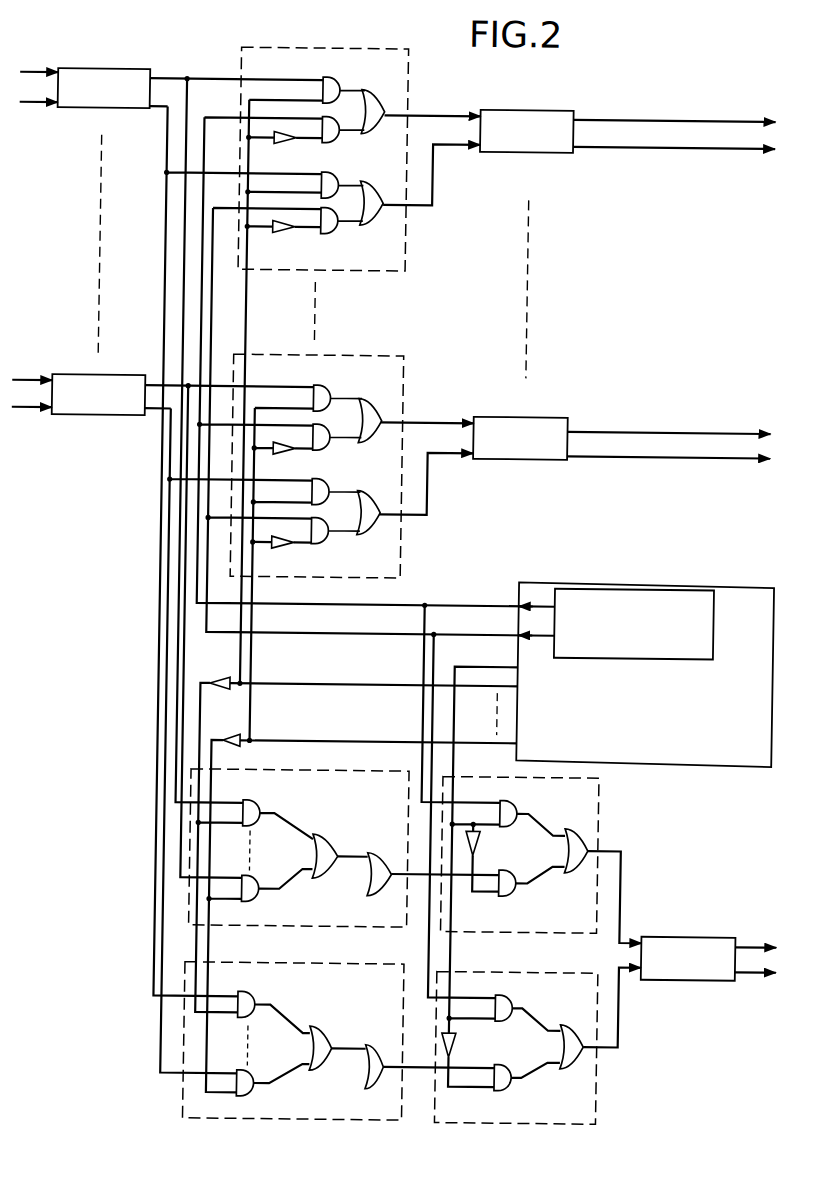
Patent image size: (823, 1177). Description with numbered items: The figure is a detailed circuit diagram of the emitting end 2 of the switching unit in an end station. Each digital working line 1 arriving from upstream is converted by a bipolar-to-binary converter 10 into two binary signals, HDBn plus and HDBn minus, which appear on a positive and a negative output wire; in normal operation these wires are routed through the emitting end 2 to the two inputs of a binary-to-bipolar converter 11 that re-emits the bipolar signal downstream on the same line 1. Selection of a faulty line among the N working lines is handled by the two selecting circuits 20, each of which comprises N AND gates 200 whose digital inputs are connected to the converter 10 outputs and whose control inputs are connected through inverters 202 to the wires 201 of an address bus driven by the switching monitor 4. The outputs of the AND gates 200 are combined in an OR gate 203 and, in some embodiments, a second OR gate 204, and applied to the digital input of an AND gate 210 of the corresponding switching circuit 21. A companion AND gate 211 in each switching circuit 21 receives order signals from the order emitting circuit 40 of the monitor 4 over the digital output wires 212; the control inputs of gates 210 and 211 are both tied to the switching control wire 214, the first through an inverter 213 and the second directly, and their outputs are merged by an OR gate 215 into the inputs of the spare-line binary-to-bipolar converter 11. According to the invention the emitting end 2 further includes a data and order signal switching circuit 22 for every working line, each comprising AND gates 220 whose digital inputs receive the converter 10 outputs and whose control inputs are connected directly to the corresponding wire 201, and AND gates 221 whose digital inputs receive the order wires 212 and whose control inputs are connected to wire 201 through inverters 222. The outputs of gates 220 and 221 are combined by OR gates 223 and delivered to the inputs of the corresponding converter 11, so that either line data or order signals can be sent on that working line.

The emitting end of the switching unit 2 is at (132, 1078).
The switching monitor 4 is at (729, 765).
The order emitting circuit 40 is at (717, 628).
The bipolar-to-binary converter 10 is at (167, 252).
The binary-to-bipolar converter 11 is at (587, 550).
The digital working line 1 is at (673, 577).
The data and order signal switching circuit 22 is at (319, 296).
The AND gate 220 is at (339, 276).
The AND gate 221 is at (344, 346).
The inverter 222 is at (281, 355).
The OR gate 223 is at (407, 306).
The digital output wire 212 is at (375, 557).
The switching control wire 214 is at (482, 838).
The address bus wire 201 is at (358, 597).
The inverter 202 is at (226, 697).
The selecting circuit 20 is at (295, 944).
The AND gate 200 is at (275, 948).
The OR gate 203 is at (336, 938).
The second OR gate 204 is at (411, 986).
The switching circuit 21 is at (517, 951).
The AND gate 210 is at (514, 995).
The AND gate 211 is at (530, 904).
The inverter 213 is at (489, 956).
The OR gate 215 is at (589, 966).